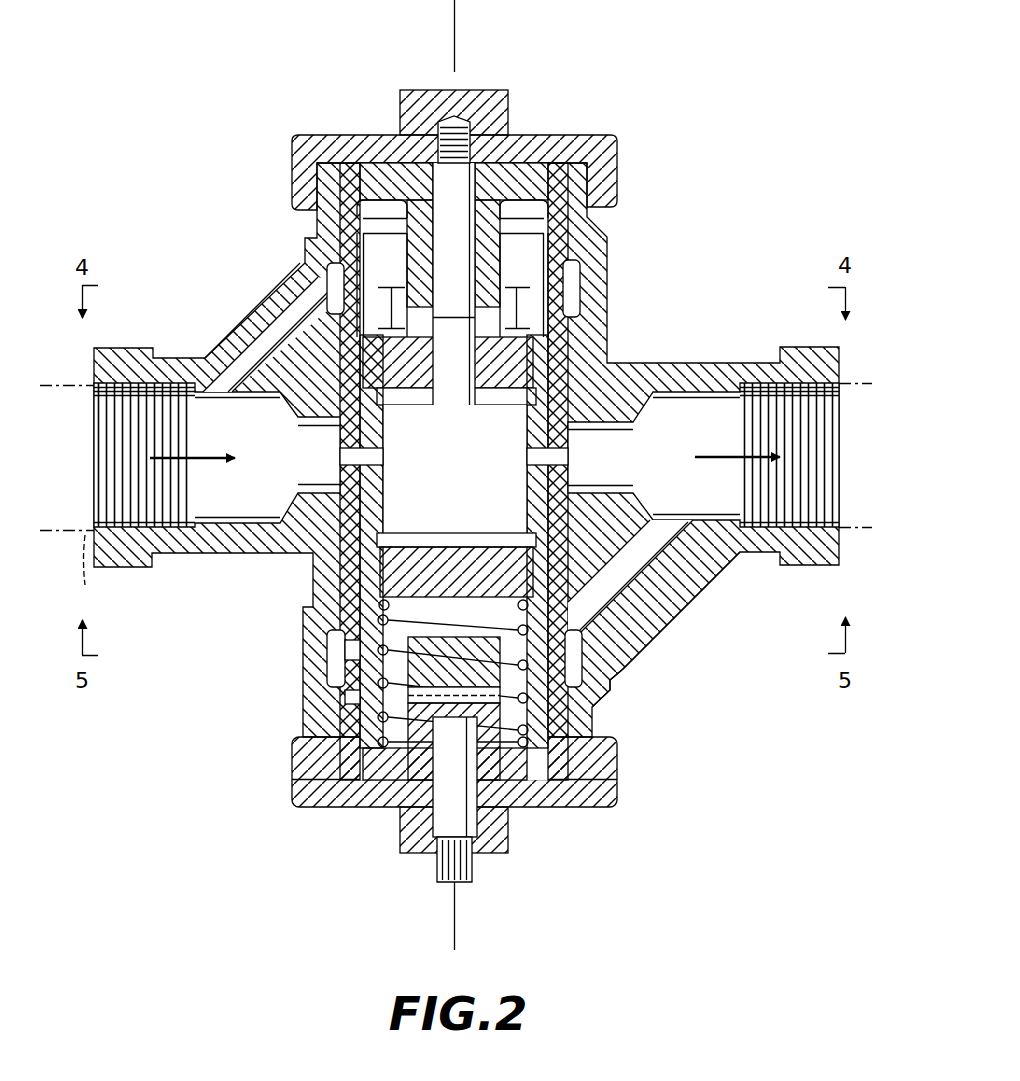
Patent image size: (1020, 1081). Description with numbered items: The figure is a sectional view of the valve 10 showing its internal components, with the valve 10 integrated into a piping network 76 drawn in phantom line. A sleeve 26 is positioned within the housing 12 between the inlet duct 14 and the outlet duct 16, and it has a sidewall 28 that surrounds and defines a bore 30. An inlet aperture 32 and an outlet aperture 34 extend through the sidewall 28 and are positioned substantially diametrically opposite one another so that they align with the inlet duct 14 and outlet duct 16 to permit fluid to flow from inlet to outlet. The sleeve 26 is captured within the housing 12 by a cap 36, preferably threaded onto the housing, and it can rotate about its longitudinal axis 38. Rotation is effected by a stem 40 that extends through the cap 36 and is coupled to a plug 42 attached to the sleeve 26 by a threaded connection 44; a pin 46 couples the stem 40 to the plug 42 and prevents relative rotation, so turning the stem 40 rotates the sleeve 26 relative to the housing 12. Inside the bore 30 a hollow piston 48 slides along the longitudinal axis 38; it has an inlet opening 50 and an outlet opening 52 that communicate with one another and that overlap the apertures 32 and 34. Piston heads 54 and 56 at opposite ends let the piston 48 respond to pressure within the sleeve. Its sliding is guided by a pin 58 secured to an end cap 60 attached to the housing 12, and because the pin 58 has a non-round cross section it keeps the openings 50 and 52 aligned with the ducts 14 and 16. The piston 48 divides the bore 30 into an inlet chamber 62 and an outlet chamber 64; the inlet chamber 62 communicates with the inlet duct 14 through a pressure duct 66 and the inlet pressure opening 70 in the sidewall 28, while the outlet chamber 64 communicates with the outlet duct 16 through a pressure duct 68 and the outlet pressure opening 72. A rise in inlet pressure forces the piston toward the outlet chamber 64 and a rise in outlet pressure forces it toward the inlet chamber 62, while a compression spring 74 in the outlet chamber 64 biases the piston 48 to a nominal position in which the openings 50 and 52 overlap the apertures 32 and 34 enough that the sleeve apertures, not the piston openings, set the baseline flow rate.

The valve 10 is at (760, 127).
The housing 12 is at (607, 357).
The inlet duct 14 is at (170, 560).
The outlet duct 16 is at (740, 566).
The sleeve 26 is at (340, 590).
The sidewall 28 is at (340, 548).
The bore 30 is at (362, 650).
The inlet aperture 32 is at (330, 462).
The outlet aperture 34 is at (570, 462).
The cap 36 is at (590, 808).
The longitudinal axis 38 is at (454, 40).
The stem 40 is at (470, 870).
The plug 42 is at (360, 782).
The threaded connection 44 is at (605, 757).
The pin 46 is at (590, 695).
The piston 48 is at (460, 456).
The inlet opening 50 is at (398, 460).
The outlet opening 52 is at (512, 458).
The piston head 54 is at (572, 322).
The piston head 56 is at (436, 592).
The pin 58 is at (466, 185).
The end cap 60 is at (612, 165).
The inlet chamber 62 is at (335, 270).
The outlet chamber 64 is at (585, 660).
The pressure duct 66 is at (272, 345).
The pressure duct 68 is at (665, 605).
The inlet pressure opening 70 is at (332, 298).
The outlet pressure opening 72 is at (352, 660).
The compression spring 74 is at (352, 703).
The piping network 76 is at (77, 574).